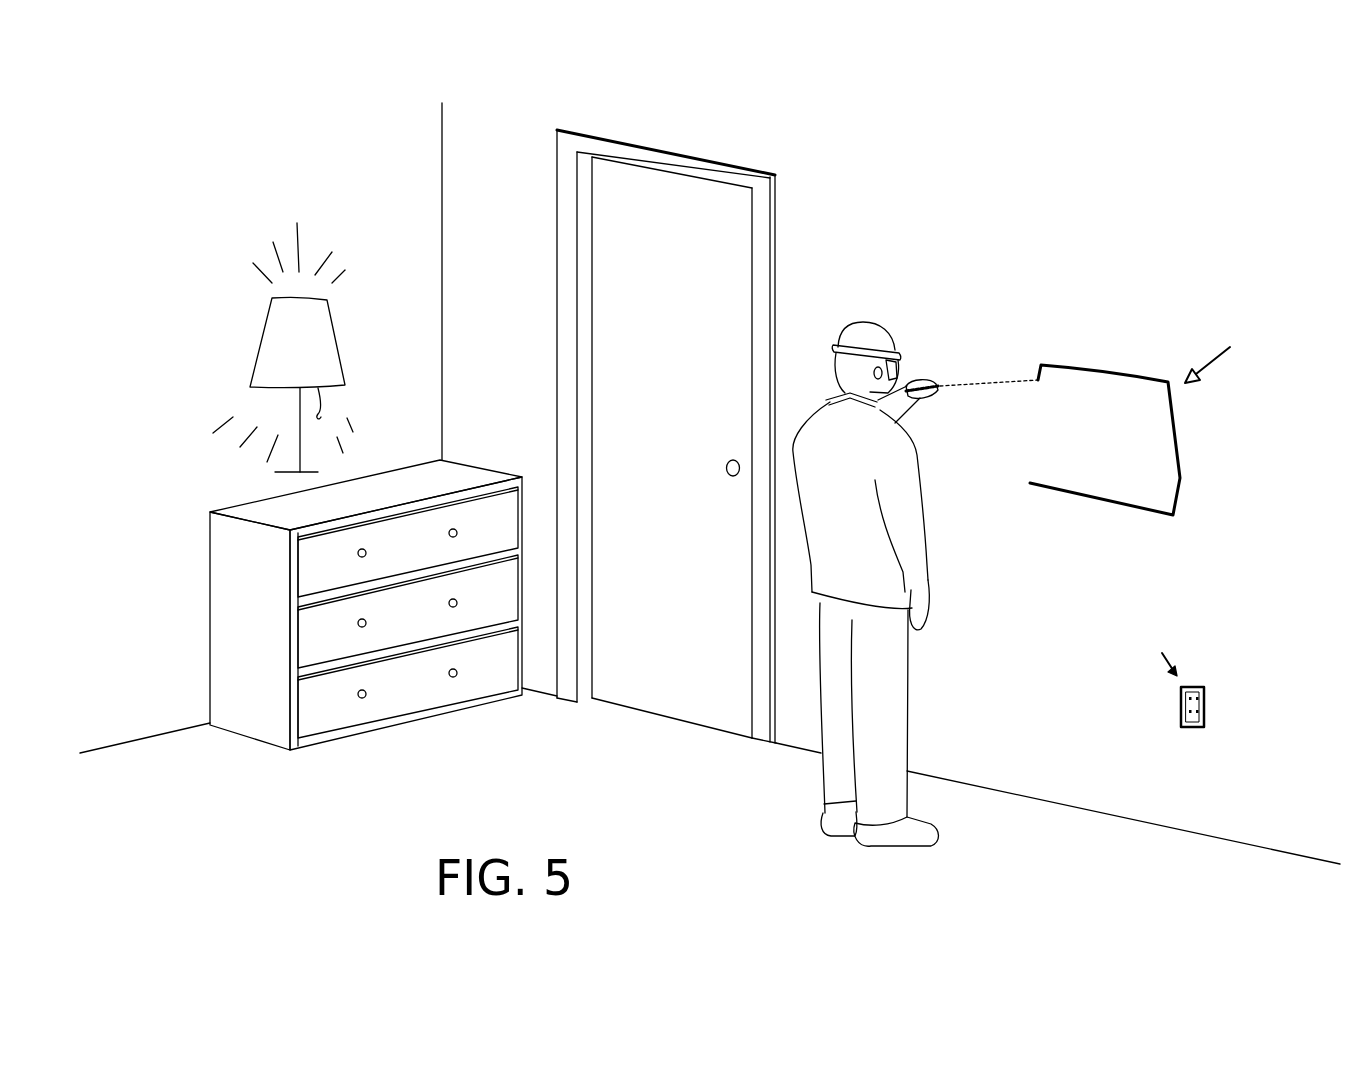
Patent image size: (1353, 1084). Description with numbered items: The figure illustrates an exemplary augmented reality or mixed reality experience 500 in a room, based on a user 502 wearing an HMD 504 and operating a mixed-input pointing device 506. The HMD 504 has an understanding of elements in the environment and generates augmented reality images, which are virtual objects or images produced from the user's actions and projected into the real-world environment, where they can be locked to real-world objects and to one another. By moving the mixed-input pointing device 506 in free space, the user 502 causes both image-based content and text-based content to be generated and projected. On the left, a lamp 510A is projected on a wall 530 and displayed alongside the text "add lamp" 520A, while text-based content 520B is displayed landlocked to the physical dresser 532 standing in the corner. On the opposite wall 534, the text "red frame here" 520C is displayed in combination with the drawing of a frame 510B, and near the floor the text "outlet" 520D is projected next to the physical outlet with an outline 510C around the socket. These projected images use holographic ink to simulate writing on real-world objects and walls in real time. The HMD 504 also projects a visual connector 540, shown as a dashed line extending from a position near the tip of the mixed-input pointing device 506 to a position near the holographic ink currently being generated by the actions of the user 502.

The augmented reality environment 500 is at (1276, 231).
The user 502 is at (840, 332).
The HMD 504 is at (907, 355).
The mixed-input pointing device 506 is at (937, 395).
The lamp 510A is at (247, 335).
The frame 510B is at (1186, 475).
The outline 510C is at (1172, 707).
The "add lamp" text-based content 520A is at (226, 168).
The text-based content 520B is at (203, 625).
The "red frame here" text-based content 520C is at (1103, 301).
The "outlet" text-based content 520D is at (1112, 631).
The wall 530 is at (147, 443).
The physical dresser 532 is at (227, 510).
The wall 534 is at (920, 205).
The visual connector 540 is at (1017, 380).